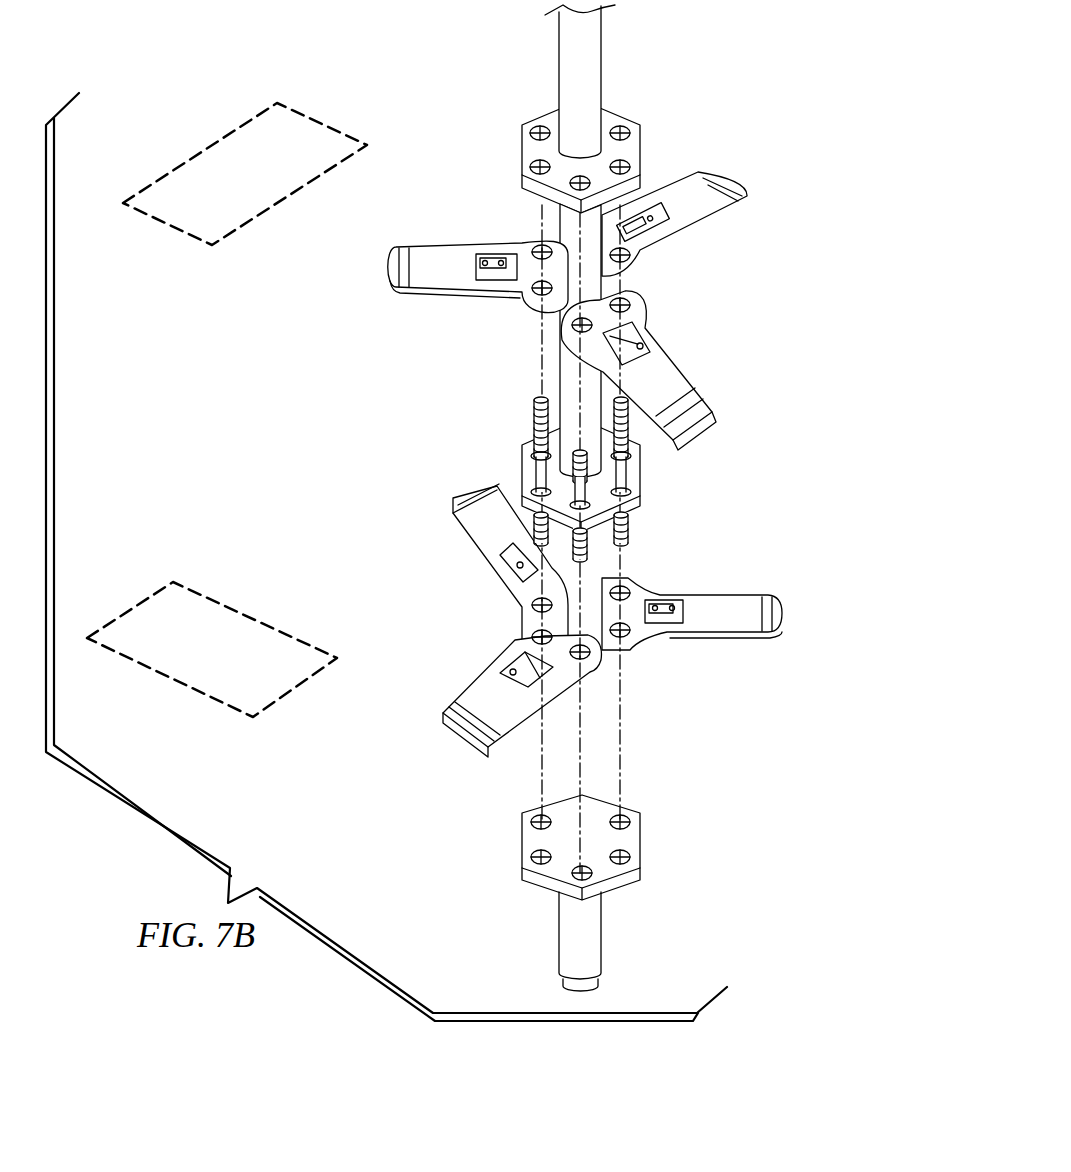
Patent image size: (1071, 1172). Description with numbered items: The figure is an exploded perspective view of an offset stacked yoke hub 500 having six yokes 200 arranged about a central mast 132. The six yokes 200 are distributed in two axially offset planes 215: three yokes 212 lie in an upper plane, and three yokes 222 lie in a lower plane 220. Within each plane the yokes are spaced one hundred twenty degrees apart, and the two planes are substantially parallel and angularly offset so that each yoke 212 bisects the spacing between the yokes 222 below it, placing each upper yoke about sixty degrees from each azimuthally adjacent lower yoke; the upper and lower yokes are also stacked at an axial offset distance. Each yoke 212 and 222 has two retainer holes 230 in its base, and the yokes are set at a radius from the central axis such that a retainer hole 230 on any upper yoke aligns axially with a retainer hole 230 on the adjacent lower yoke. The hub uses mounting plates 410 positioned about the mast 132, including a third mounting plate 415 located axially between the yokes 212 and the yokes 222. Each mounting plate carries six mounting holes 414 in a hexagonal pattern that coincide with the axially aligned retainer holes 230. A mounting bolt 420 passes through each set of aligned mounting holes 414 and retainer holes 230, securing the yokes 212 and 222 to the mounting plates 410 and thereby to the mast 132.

The offset stacked yoke hub 500 is at (581, 498).
The mounting plates 410 is at (548, 115).
The third mounting plate 415 is at (532, 128).
The mounting holes 414 is at (533, 440).
The mounting bolt 420 is at (535, 420).
The mast 132 is at (567, 374).
The retainer holes 230 is at (533, 247).
The yokes 200 is at (581, 464).
The yokes in upper plane 212 is at (717, 223).
The yokes in lower plane 222 is at (475, 545).
The axially offset planes 215 is at (243, 410).
The lower plane 220 is at (215, 145).